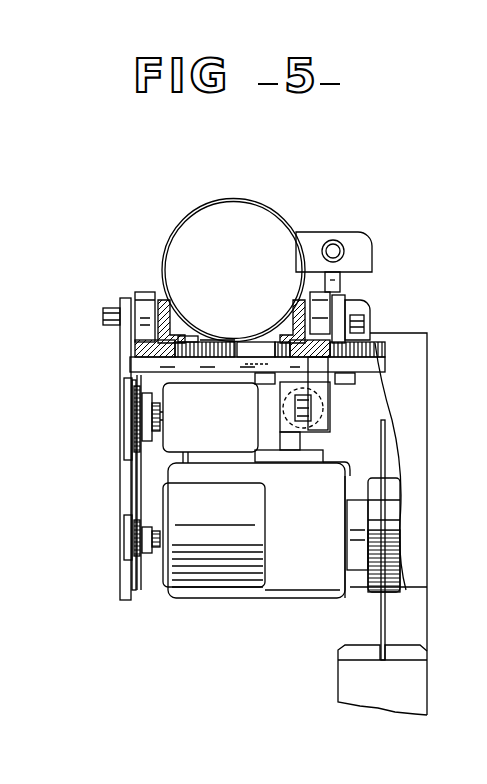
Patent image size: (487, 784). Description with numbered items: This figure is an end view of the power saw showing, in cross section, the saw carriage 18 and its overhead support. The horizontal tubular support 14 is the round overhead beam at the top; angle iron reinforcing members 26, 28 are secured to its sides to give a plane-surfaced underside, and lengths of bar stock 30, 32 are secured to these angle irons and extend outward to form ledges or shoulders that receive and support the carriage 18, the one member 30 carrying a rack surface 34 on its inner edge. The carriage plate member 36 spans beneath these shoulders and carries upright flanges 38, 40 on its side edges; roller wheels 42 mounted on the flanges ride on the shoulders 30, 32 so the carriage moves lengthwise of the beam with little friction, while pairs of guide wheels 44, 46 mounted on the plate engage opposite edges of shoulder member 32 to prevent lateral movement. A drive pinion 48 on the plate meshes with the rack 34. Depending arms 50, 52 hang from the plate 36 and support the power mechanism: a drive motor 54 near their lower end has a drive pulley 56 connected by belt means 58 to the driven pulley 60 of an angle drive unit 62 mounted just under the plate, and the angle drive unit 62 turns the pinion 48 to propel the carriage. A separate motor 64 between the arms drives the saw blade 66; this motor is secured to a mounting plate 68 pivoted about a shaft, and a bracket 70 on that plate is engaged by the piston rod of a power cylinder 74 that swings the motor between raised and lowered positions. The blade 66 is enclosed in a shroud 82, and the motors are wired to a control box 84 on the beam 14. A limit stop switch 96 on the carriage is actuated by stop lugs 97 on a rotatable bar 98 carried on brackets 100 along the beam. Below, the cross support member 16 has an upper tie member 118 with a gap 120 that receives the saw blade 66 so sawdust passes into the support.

The horizontal tubular support 14 is at (262, 207).
The cross support member 16 is at (338, 680).
The power driven saw carriage 18 is at (103, 629).
The angle iron reinforcing member 26 is at (162, 332).
The angle iron reinforcing member 28 is at (296, 330).
The bar stock shoulder member 30 is at (140, 350).
The bar stock shoulder member 32 is at (273, 342).
The rack surface 34 is at (178, 345).
The carriage plate member 36 is at (130, 363).
The upright flange 38 is at (122, 337).
The upright flange 40 is at (340, 312).
The roller wheels 42 is at (140, 303).
The guide wheels 44 is at (247, 348).
The guide wheels 46 is at (388, 352).
The drive pinion 48 is at (202, 345).
The depending arm 50 is at (130, 470).
The depending arm 52 is at (340, 412).
The drive motor 54 is at (245, 512).
The drive pulley 56 is at (127, 518).
The belt means 58 is at (141, 482).
The driven pulley 60 is at (127, 418).
The angle drive unit 62 is at (243, 440).
The saw blade drive motor 64 is at (285, 585).
The saw blade 66 is at (388, 441).
The mounting plate 68 is at (305, 455).
The bracket 70 is at (308, 446).
The power cylinder 74 is at (320, 395).
The shroud 82 is at (428, 400).
The control box 84 is at (428, 604).
The limit stop switch 96 is at (356, 322).
The stop lugs 97 is at (340, 272).
The rotatable bar 98 is at (338, 252).
The brackets 100 is at (314, 240).
The tie member 118 is at (352, 655).
The gap 120 is at (386, 656).